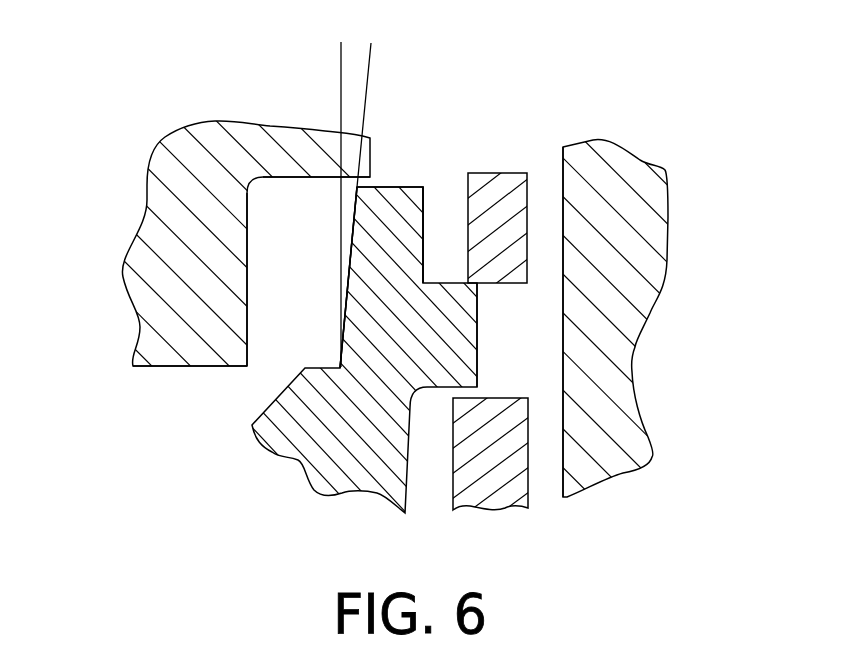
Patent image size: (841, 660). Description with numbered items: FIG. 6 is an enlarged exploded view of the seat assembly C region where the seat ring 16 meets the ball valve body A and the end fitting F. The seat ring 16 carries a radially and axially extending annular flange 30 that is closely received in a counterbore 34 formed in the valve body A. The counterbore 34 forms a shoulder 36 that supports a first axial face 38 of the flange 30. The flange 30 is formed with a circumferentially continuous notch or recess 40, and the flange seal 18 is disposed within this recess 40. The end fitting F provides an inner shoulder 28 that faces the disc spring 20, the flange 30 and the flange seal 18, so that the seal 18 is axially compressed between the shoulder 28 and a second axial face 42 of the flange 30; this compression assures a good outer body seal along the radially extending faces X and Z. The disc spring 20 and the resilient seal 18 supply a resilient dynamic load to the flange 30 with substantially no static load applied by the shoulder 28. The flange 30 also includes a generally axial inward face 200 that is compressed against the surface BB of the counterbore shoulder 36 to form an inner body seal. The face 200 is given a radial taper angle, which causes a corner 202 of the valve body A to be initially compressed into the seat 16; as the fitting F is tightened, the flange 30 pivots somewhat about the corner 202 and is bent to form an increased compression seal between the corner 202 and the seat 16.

The seat ring 16 is at (365, 480).
The flange seal 18 is at (494, 187).
The disc spring 20 is at (478, 493).
The inner shoulder 28 is at (563, 408).
The annular flange 30 is at (357, 308).
The counterbore 34 is at (289, 177).
The shoulder 36 is at (247, 318).
The first axial face 38 is at (350, 287).
The notch or recess 40 is at (438, 256).
The second axial face 42 is at (423, 226).
The axial inward face 200 is at (352, 233).
The corner 202 is at (247, 367).
The ball valve body A is at (193, 165).
The surface BB is at (262, 257).
The seat assembly C is at (595, 103).
The end fitting F is at (650, 233).
The face X is at (432, 188).
The face Z is at (558, 150).